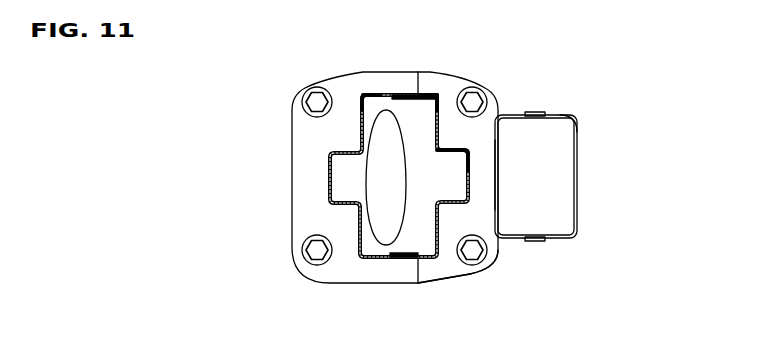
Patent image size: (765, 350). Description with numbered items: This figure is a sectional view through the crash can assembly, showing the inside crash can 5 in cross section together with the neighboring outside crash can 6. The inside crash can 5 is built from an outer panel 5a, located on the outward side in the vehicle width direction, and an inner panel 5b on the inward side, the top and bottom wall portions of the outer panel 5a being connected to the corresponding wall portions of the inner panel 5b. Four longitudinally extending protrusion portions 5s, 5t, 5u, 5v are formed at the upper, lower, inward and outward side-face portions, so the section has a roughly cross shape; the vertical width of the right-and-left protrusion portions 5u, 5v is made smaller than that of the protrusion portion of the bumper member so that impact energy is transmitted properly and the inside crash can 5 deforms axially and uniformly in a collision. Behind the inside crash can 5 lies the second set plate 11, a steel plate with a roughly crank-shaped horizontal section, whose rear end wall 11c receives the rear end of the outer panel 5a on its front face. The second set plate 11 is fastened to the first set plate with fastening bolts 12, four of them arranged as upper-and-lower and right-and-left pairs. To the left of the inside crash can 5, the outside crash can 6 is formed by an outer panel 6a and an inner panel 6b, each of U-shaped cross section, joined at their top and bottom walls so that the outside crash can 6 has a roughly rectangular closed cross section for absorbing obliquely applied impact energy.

The inside crash can 5 is at (308, 145).
The outer panel 5a is at (438, 90).
The inner panel 5b is at (363, 88).
The protrusion portion 5s is at (383, 93).
The protrusion portion 5t is at (377, 260).
The protrusion portion 5u is at (472, 157).
The protrusion portion 5v is at (328, 187).
The outside crash can 6 is at (582, 145).
The outer panel 6a is at (577, 118).
The inner panel 6b is at (502, 172).
The second set plate 11 is at (465, 278).
The rear end wall 11c is at (450, 278).
The fastening bolts 12 is at (310, 98).